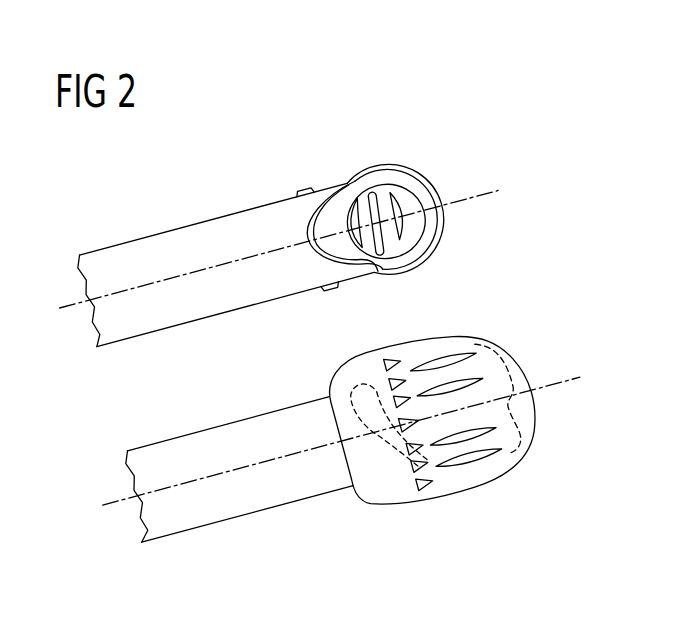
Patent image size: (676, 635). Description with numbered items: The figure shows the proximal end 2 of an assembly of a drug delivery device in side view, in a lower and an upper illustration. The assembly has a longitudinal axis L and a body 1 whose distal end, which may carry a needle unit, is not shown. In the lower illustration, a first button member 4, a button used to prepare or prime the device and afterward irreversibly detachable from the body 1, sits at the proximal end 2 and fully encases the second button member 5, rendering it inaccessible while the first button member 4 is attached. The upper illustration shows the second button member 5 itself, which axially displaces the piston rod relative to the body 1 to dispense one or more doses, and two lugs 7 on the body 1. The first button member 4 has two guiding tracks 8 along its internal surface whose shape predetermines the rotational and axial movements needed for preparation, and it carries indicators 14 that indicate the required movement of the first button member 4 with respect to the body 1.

The body 1 is at (182, 242).
The proximal end 2 is at (405, 135).
The first button member 4 is at (514, 447).
The second button member 5 is at (423, 247).
The lugs 7 is at (304, 191).
The guiding tracks 8 is at (387, 443).
The indicators 14 is at (392, 355).
The longitudinal axis L is at (483, 200).